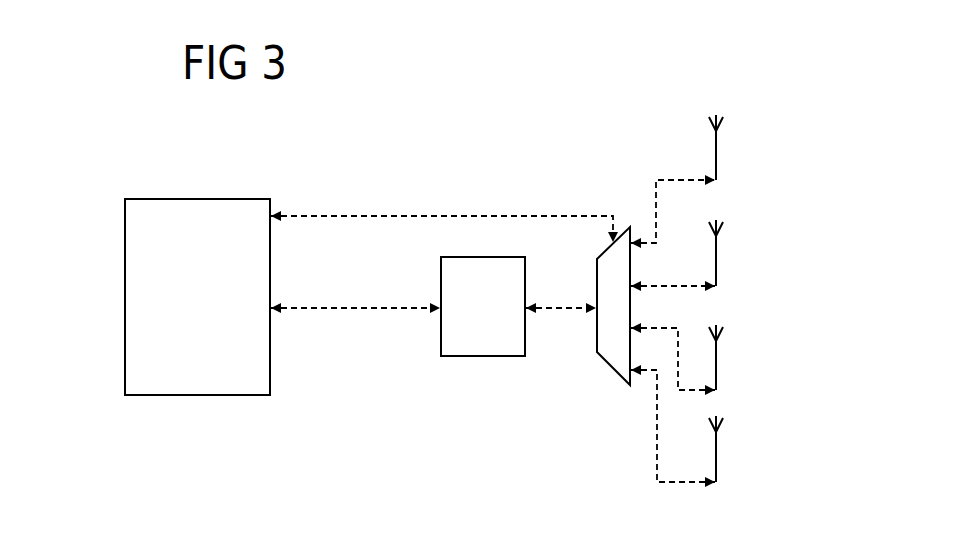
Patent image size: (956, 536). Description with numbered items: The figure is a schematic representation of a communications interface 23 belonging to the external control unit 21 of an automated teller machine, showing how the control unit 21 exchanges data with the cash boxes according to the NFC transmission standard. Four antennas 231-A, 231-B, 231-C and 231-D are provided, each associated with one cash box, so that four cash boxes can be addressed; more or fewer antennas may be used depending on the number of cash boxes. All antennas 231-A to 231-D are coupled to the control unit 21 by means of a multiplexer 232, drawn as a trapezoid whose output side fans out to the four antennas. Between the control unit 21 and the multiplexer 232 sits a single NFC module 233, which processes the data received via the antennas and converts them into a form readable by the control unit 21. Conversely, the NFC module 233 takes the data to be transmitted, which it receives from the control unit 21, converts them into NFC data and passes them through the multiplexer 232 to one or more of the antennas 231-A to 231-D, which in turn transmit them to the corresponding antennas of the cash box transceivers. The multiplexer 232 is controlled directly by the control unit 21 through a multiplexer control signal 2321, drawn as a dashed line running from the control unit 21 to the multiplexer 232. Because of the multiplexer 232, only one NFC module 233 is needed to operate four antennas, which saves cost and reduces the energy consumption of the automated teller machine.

The communications interface 23 is at (498, 96).
The control unit 21 is at (125, 313).
The NFC module 233 is at (468, 285).
The multiplexer 232 is at (610, 267).
The multiplexer control signal 2321 is at (338, 213).
The antenna 231-A is at (717, 168).
The antenna 231-B is at (717, 252).
The antenna 231-C is at (717, 362).
The antenna 231-D is at (717, 455).